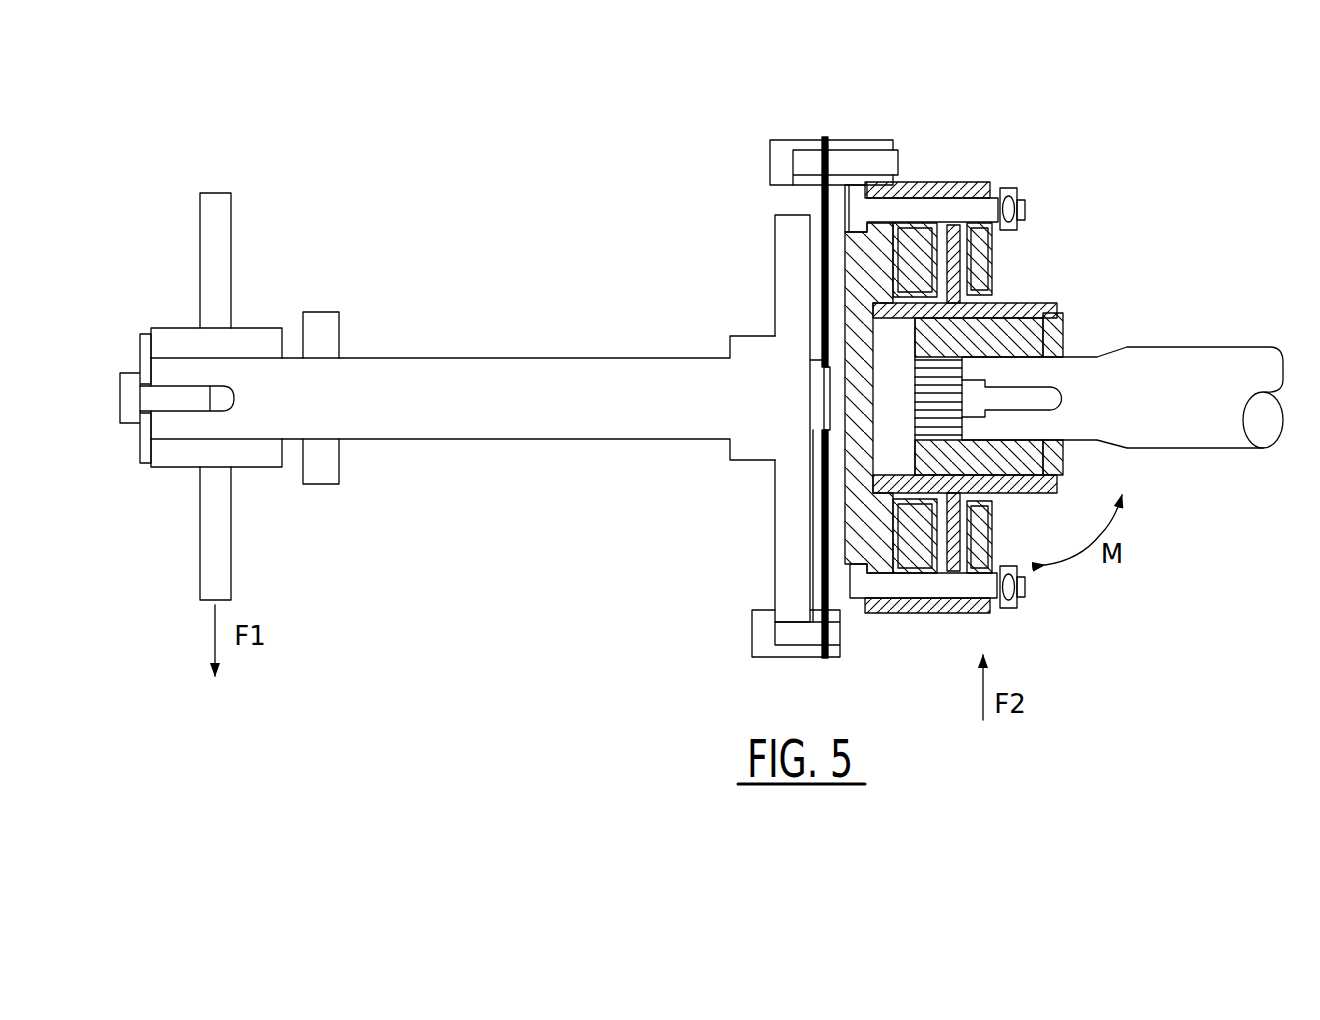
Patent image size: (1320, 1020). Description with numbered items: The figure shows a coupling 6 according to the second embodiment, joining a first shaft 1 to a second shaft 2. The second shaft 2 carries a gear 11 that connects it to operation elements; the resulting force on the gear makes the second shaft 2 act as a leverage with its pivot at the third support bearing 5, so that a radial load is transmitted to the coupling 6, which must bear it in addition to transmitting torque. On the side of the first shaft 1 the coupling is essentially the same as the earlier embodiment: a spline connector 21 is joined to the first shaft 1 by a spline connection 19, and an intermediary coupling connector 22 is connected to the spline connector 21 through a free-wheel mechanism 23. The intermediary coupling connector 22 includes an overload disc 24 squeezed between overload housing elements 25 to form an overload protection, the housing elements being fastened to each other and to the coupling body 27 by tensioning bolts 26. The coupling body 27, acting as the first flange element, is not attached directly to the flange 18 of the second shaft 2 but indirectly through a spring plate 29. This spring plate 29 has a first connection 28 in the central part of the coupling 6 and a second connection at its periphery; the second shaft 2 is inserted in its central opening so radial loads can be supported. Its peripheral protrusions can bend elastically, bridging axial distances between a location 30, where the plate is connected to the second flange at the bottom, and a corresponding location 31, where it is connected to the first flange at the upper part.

The first shaft 1 is at (1202, 425).
The second shaft 2 is at (545, 365).
The third support bearing 5 is at (317, 320).
The coupling 6 is at (845, 678).
The gear 11 is at (218, 232).
The flange 18 is at (788, 530).
The spline connection 19 is at (1045, 352).
The spline connector 21 is at (1057, 460).
The intermediary coupling connector 22 is at (1032, 300).
The free-wheel mechanism 23 is at (1065, 323).
The overload disc 24 is at (948, 250).
The overload housing elements 25 is at (915, 240).
The tensioning bolts 26 is at (898, 215).
The coupling body 27 is at (877, 605).
The first connection 28 is at (827, 367).
The spring plate 29 is at (825, 490).
The connection 30 is at (763, 633).
The connection 31 is at (778, 160).